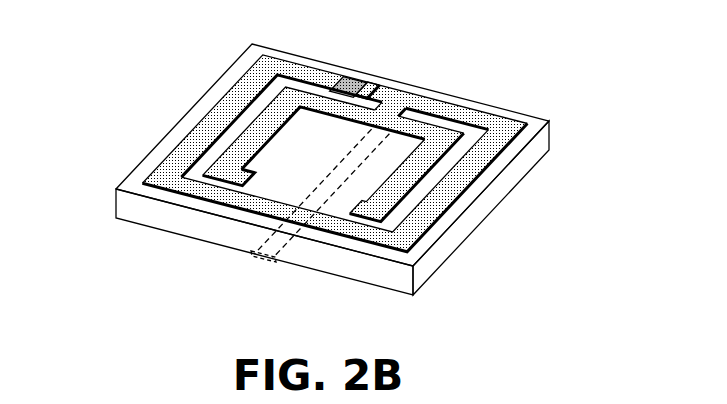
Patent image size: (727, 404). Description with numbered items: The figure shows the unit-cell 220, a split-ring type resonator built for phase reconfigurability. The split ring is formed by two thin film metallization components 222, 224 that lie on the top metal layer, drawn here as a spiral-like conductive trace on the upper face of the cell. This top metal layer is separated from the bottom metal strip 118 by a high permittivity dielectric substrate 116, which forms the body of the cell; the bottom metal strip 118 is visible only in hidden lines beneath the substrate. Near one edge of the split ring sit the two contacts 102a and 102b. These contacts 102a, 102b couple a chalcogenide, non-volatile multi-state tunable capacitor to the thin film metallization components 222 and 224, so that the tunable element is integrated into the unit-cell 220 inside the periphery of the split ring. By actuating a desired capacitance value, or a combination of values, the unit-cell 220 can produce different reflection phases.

The unit-cell 220 is at (140, 103).
The high permittivity dielectric substrate 116 is at (383, 268).
The bottom metal strip 118 is at (266, 253).
The thin film metallization component 222 is at (268, 121).
The thin film metallization component 224 is at (280, 210).
The contact 102a is at (350, 86).
The contact 102b is at (372, 83).